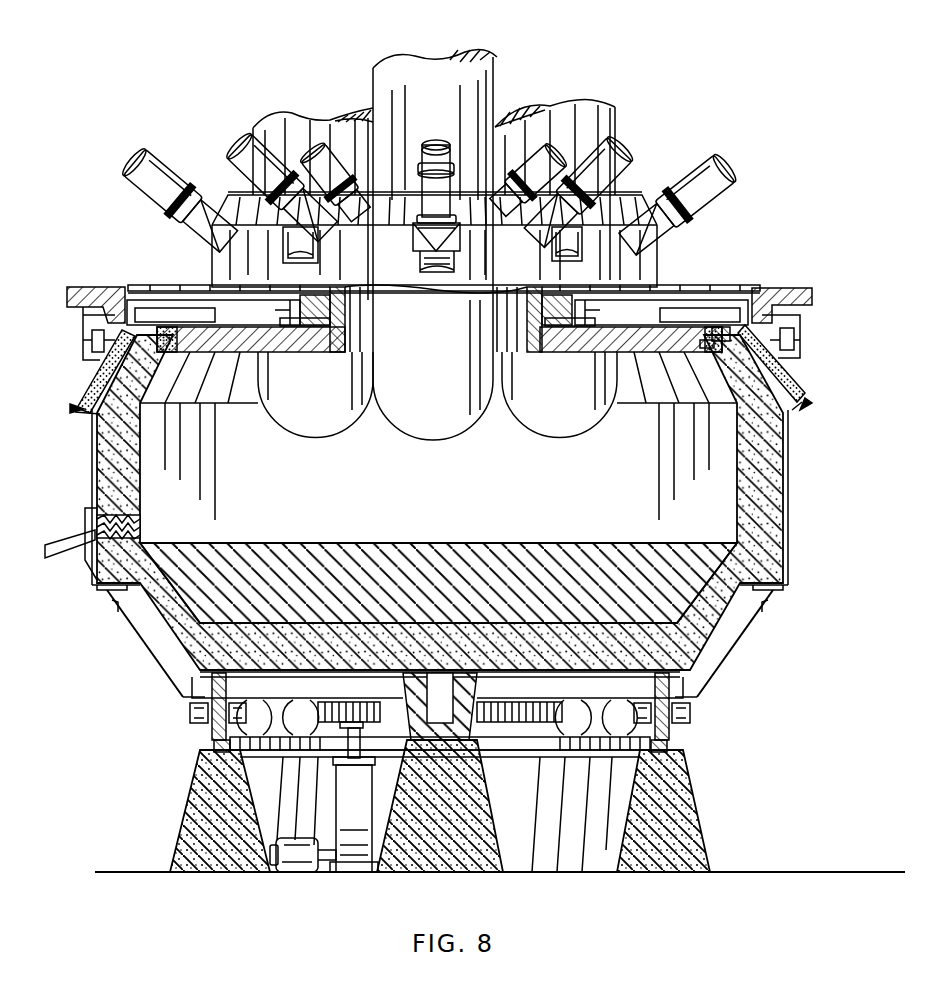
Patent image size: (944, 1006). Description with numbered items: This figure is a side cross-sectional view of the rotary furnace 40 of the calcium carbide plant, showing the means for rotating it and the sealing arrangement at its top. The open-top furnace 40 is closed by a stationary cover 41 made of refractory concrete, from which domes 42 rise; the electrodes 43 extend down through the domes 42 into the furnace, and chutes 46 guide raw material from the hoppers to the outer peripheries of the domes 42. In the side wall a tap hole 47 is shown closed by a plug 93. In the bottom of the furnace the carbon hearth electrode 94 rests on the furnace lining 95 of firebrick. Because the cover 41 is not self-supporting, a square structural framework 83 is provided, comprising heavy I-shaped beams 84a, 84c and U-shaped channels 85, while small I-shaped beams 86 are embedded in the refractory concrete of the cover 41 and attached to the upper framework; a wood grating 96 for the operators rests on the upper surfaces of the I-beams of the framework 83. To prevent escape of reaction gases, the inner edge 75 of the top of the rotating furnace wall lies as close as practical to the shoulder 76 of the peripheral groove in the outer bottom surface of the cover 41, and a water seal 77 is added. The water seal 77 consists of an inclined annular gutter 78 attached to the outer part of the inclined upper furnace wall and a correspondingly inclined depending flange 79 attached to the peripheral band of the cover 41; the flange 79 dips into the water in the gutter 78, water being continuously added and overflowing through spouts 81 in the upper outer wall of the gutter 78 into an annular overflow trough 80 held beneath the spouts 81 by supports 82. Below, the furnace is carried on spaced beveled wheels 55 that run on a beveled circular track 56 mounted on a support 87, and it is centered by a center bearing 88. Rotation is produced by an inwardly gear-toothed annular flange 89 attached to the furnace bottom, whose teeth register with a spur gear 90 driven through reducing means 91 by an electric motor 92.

The rotary furnace 40 is at (442, 475).
The cover 41 is at (225, 352).
The domes 42 is at (434, 200).
The electrodes 43 is at (437, 370).
The chutes 46 is at (142, 192).
The tap hole 47 is at (96, 514).
The wheels 55 is at (672, 728).
The circular track 56 is at (668, 746).
The inner edge 75 is at (722, 342).
The shoulder 76 is at (703, 348).
The water seal 77 is at (72, 408).
The gutter 78 is at (790, 404).
The flange 79 is at (98, 370).
The overflow trough 80 is at (802, 352).
The spouts 81 is at (802, 318).
The supports 82 is at (800, 336).
The structural framework 83 is at (700, 285).
The outer I-shaped beams 84a is at (128, 282).
The I-shaped beams 84c is at (300, 305).
The U-shaped channels 85 is at (195, 302).
The small I-shaped beams 86 is at (310, 340).
The support 87 is at (695, 812).
The center bearing 88 is at (478, 693).
The annular flange 89 is at (318, 708).
The spur gear 90 is at (360, 702).
The reducing means 91 is at (354, 800).
The electric motor 92 is at (307, 868).
The plug 93 is at (142, 528).
The carbon hearth electrode 94 is at (472, 548).
The furnace lining 95 is at (122, 470).
The wood grating 96 is at (157, 285).